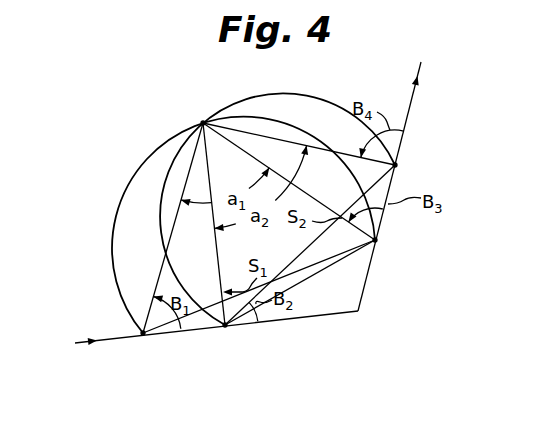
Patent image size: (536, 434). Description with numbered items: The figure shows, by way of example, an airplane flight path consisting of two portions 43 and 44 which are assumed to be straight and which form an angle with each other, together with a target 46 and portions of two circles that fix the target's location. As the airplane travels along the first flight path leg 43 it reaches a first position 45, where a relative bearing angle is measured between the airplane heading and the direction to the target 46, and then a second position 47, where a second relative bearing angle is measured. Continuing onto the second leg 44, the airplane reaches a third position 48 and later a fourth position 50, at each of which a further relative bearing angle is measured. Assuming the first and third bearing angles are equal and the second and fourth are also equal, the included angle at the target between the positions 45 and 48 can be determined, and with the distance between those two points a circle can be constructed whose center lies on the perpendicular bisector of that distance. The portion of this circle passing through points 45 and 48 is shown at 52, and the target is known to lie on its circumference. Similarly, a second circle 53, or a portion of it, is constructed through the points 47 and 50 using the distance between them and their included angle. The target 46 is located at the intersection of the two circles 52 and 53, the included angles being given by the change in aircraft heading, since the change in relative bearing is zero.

The flight path portion 43 is at (313, 315).
The flight path portion 44 is at (411, 103).
The position 45 is at (140, 332).
The target 46 is at (205, 122).
The second position 47 is at (224, 327).
The position 48 is at (377, 243).
The fourth position 50 is at (397, 163).
The circle 52 is at (131, 181).
The second circle 53 is at (293, 93).